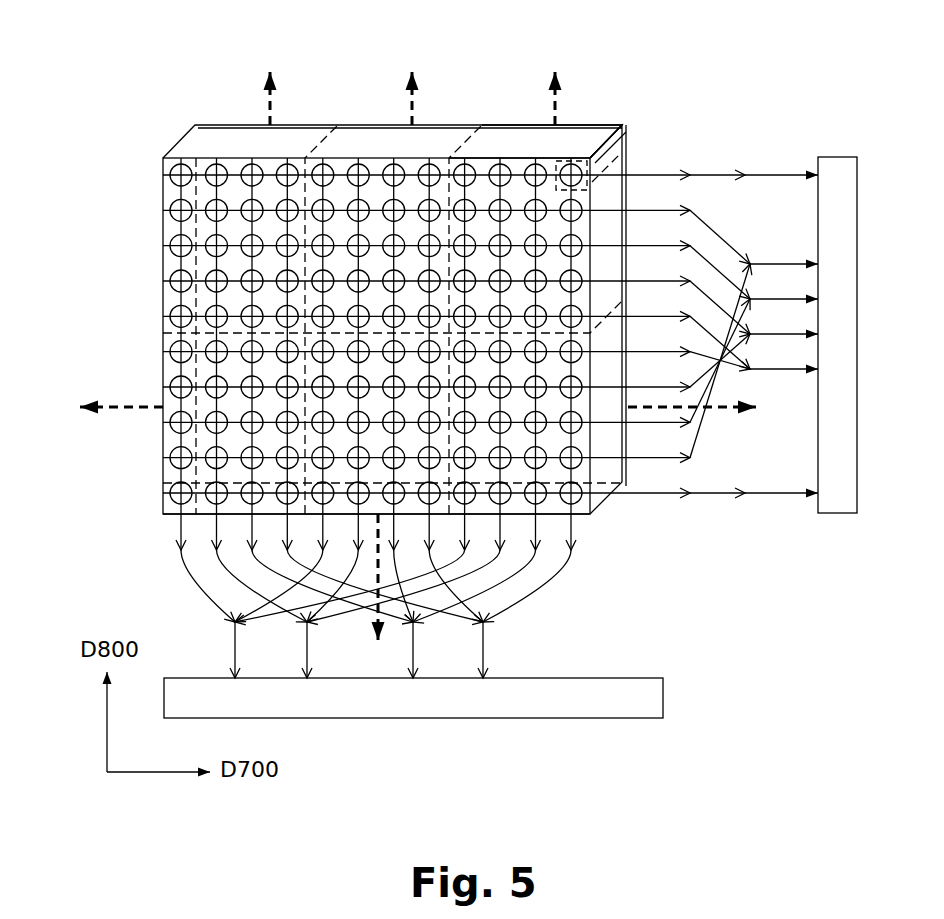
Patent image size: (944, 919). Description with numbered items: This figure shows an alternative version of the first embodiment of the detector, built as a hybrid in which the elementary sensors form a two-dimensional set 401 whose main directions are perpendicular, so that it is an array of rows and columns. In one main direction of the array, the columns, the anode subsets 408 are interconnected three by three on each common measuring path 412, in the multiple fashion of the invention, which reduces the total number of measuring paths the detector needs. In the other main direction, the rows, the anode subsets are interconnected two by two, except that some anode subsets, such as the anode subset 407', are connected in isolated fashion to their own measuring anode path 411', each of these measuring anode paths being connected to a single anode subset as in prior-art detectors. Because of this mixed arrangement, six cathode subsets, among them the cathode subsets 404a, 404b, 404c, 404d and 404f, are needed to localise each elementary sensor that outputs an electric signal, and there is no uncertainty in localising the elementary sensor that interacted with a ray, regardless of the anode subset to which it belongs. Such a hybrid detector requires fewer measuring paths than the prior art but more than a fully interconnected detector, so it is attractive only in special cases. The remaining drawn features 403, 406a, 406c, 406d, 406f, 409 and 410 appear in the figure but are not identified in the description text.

The two-dimensional set 401 is at (160, 126).
The lenslet 403 is at (570, 236).
The cathode subset 404a is at (235, 135).
The cathode subset 404b is at (385, 140).
The cathode subset 404c is at (512, 145).
The cathode subset 404d is at (610, 470).
The cathode subset 404f is at (163, 435).
The light direction through top surface 406a is at (272, 98).
The light direction through top surface 406c is at (556, 95).
The light direction through right surface 406d is at (721, 409).
The light direction through left surface 406f is at (110, 404).
The anode subset 407' is at (667, 117).
The anode subsets interconnected three by three 408 is at (572, 525).
The detector / target plate 409 is at (835, 172).
The corner edge of optical element 410 is at (605, 135).
The measuring anode path 411' is at (779, 132).
The measuring path 412 is at (232, 632).